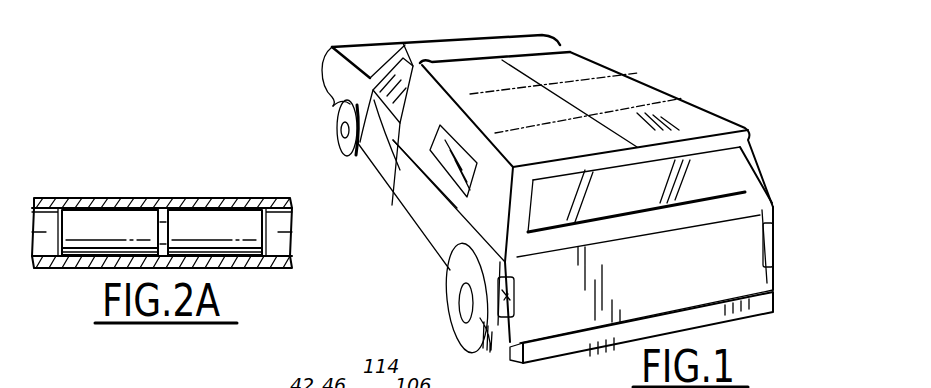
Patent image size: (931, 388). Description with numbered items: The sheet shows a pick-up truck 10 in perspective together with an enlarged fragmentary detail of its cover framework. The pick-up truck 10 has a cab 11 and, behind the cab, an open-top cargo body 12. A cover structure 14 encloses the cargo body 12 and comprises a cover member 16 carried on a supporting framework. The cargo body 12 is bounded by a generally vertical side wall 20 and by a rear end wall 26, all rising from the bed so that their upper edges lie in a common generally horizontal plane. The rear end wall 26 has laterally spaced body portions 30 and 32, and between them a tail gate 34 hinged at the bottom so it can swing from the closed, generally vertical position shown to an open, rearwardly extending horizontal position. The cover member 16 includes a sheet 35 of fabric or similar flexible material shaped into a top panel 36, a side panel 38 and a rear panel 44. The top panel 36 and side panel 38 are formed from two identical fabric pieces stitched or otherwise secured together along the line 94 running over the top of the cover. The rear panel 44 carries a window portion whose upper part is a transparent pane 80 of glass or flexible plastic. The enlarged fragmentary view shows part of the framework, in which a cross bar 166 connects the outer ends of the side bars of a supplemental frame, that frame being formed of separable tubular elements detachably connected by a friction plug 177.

In FIG. 1, the pick-up truck 10 is at (543, 185).
In FIG. 1, the cab 11 is at (386, 47).
In FIG. 1, the cargo body 12 is at (427, 236).
In FIG. 1, the cover structure 14 is at (620, 197).
In FIG. 1, the cover member 16 is at (640, 80).
In FIG. 1, the side wall 20 is at (411, 206).
In FIG. 1, the rear end wall 26 is at (682, 301).
In FIG. 1, the body portion 30 is at (508, 330).
In FIG. 1, the body portion 32 is at (770, 280).
In FIG. 1, the tail gate 34 is at (680, 268).
In FIG. 1, the sheet 35 is at (658, 92).
In FIG. 1, the top panel 36 is at (596, 69).
In FIG. 1, the side panel 38 is at (371, 161).
In FIG. 1, the rear panel 44 is at (767, 181).
In FIG. 1, the transparent pane 80 is at (645, 196).
In FIG. 1, the line 94 is at (535, 76).
In FIG. 2A, the cross bar 166 is at (100, 198).
In FIG. 2A, the friction plug 177 is at (212, 216).